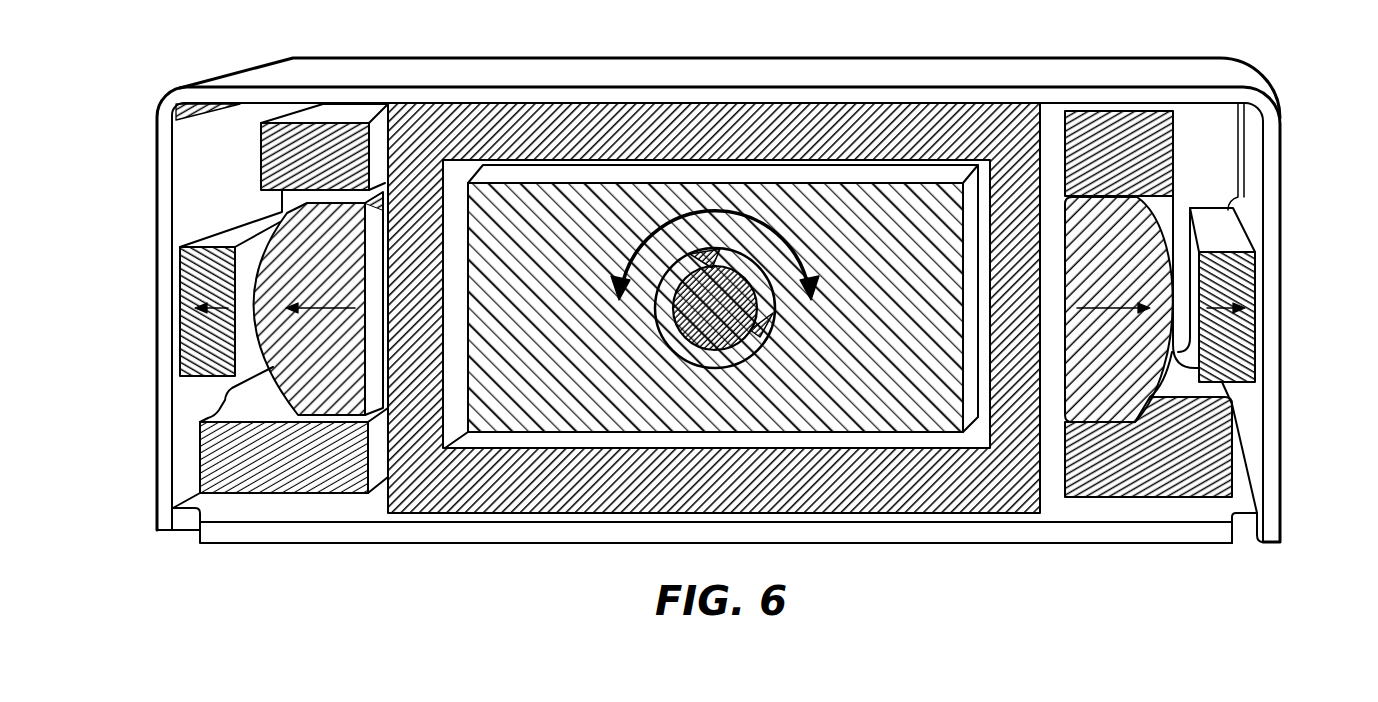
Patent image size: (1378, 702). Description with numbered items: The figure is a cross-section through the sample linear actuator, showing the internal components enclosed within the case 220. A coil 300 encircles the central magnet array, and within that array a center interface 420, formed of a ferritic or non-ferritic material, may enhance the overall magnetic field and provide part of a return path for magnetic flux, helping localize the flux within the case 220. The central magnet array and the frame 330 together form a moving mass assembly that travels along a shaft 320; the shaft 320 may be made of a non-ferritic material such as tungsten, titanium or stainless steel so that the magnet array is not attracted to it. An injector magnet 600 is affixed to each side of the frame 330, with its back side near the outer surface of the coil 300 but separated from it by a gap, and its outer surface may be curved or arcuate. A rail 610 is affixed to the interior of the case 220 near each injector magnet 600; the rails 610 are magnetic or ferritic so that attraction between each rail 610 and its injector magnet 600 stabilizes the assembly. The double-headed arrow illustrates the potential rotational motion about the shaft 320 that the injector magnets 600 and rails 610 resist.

The case 220 is at (1265, 112).
The coil 300 is at (850, 135).
The shaft 320 is at (713, 300).
The frame 330 is at (330, 140).
The center interface 420 is at (550, 205).
The injector magnet 600 is at (300, 412).
The rail 610 is at (192, 351).